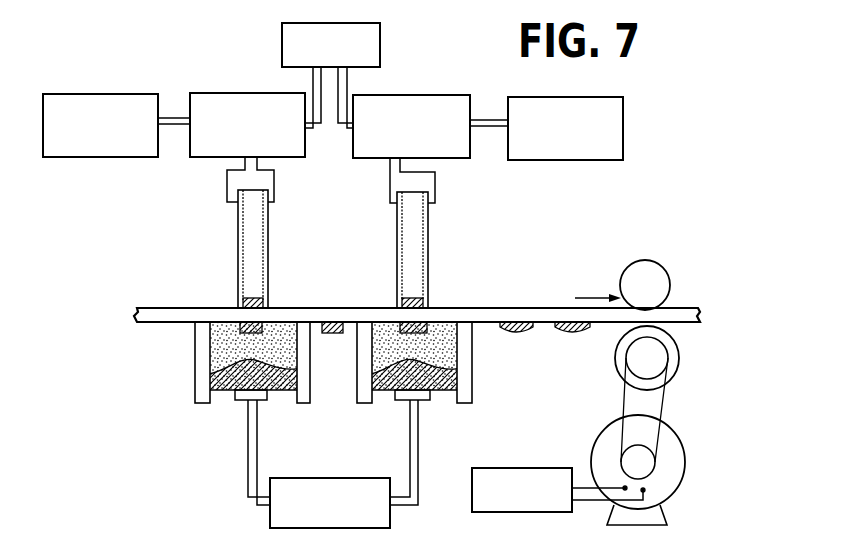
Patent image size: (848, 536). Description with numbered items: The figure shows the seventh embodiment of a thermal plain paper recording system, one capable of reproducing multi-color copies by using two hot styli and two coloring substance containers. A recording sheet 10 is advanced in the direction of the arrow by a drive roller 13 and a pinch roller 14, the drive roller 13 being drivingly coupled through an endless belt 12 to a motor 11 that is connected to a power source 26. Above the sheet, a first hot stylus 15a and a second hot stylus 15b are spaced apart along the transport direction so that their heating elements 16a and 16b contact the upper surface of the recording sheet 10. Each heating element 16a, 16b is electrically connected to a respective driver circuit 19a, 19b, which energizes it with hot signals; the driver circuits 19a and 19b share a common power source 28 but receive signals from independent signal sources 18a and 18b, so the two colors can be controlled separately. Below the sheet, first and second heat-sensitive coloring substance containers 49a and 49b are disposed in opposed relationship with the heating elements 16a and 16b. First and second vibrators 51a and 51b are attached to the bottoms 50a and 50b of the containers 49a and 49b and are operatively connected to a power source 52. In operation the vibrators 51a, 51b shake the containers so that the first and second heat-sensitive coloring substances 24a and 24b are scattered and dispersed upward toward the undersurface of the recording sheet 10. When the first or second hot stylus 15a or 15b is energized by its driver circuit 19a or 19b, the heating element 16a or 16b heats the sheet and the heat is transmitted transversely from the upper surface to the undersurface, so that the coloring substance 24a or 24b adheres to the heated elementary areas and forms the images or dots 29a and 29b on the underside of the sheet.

The recording sheet 10 is at (168, 307).
The motor 11 is at (672, 458).
The endless belt 12 is at (623, 404).
The drive roller 13 is at (680, 355).
The pinch roller 14 is at (648, 260).
The first hot stylus 15a is at (281, 232).
The second hot stylus 15b is at (441, 233).
The first heating element 16a is at (268, 284).
The second heating element 16b is at (415, 300).
The first signal source 18a is at (118, 93).
The second signal source 18b is at (624, 125).
The first driver circuit 19a is at (238, 93).
The second driver circuit 19b is at (456, 95).
The first heat-sensitive coloring substance 24a is at (282, 380).
The second heat-sensitive coloring substance 24b is at (438, 385).
The power source 26 is at (523, 467).
The power source 28 is at (380, 35).
The first images or dots 29a is at (245, 328).
The second images or dots 29b is at (518, 322).
The first heat-sensitive coloring substance container 49a is at (214, 413).
The second heat-sensitive coloring substance container 49b is at (398, 413).
The bottom of first container 50a is at (230, 392).
The bottom of second container 50b is at (383, 394).
The first vibrator 51a is at (243, 405).
The second vibrator 51b is at (419, 402).
The power source 52 is at (390, 515).